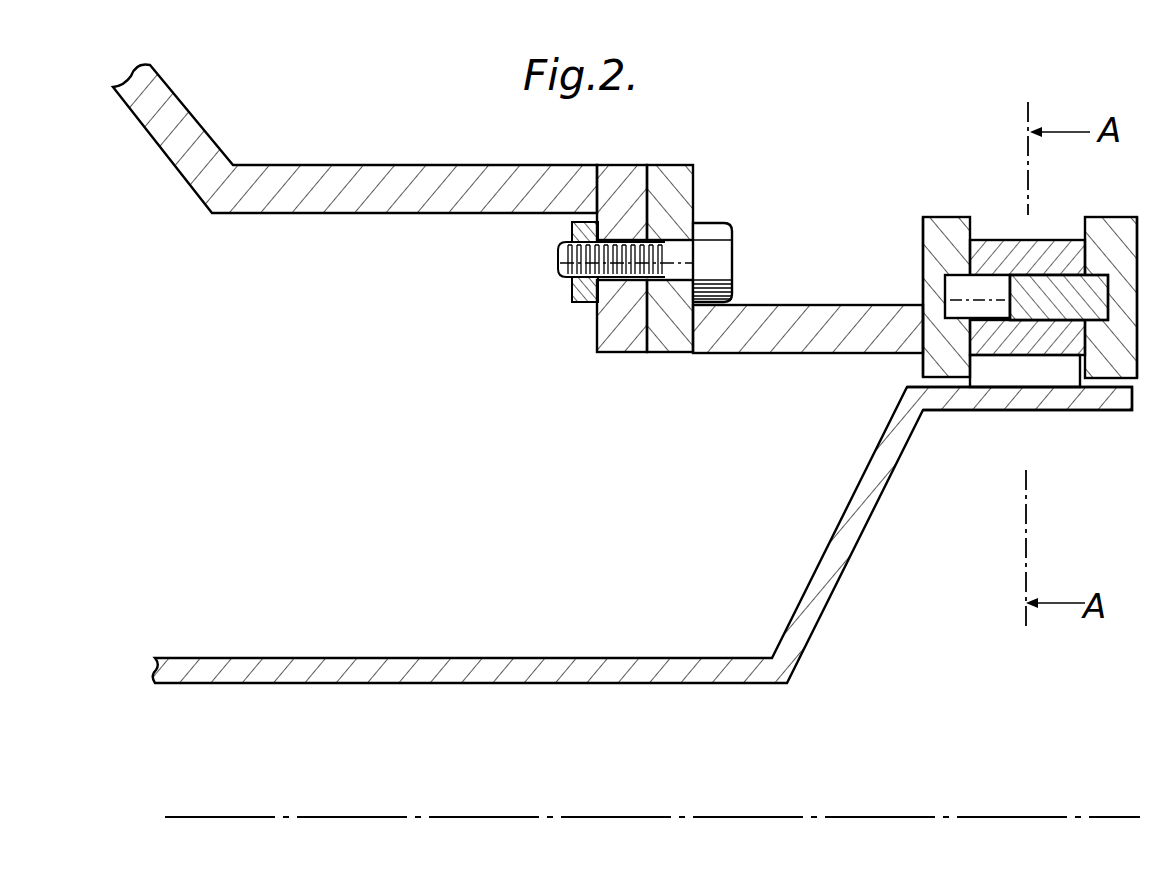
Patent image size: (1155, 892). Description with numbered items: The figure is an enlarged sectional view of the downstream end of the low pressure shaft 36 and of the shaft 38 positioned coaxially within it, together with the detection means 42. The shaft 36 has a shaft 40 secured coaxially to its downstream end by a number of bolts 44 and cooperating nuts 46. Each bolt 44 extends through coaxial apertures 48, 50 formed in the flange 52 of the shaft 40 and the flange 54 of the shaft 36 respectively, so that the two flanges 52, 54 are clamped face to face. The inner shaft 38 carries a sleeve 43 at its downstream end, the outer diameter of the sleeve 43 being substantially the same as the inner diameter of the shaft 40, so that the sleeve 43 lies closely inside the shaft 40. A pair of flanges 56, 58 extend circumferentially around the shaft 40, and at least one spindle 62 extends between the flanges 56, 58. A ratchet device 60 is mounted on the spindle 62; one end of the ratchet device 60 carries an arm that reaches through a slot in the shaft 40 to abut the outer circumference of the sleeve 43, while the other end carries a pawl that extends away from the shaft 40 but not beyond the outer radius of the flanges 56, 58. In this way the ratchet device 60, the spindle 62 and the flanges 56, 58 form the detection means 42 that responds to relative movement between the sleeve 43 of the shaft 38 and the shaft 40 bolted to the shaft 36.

The shaft 36 is at (405, 178).
The shaft 38 is at (608, 668).
The shaft 40 is at (800, 340).
The detection means 42 is at (1112, 444).
The sleeve 43 is at (1090, 398).
The bolts 44 is at (718, 228).
The nuts 46 is at (573, 225).
The aperture 48 is at (675, 272).
The aperture 50 is at (620, 250).
The flange 52 is at (683, 190).
The flange 54 is at (618, 327).
The flange 56 is at (935, 238).
The flange 58 is at (1113, 227).
The ratchet device 60 is at (1010, 246).
The spindle 62 is at (1030, 308).